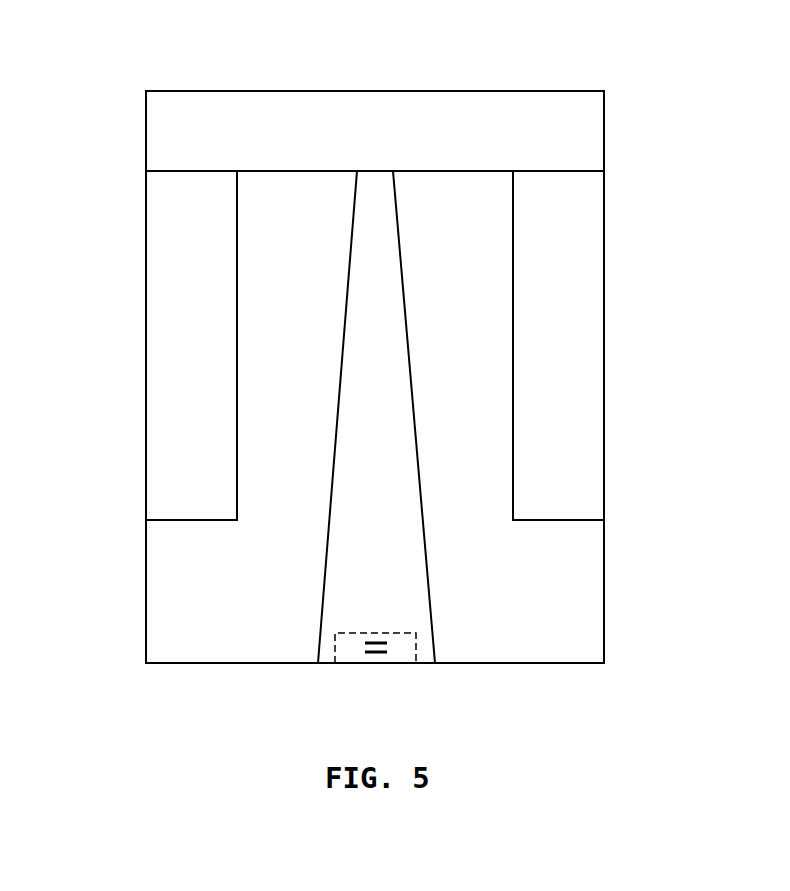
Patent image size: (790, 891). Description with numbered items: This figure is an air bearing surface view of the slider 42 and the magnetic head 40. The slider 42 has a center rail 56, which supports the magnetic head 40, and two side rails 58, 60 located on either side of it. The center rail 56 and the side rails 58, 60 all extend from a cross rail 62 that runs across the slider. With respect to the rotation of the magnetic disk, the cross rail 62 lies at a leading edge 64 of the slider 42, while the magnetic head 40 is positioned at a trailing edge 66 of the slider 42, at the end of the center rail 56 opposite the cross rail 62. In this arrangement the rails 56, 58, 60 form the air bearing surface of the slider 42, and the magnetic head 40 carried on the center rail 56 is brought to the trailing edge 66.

The slider 42 is at (146, 610).
The cross rail 62 is at (291, 105).
The leading edge 64 is at (480, 92).
The side rail 58 is at (163, 253).
The side rail 60 is at (587, 253).
The center rail 56 is at (358, 287).
The magnetic head 40 is at (355, 655).
The trailing edge 66 is at (500, 663).